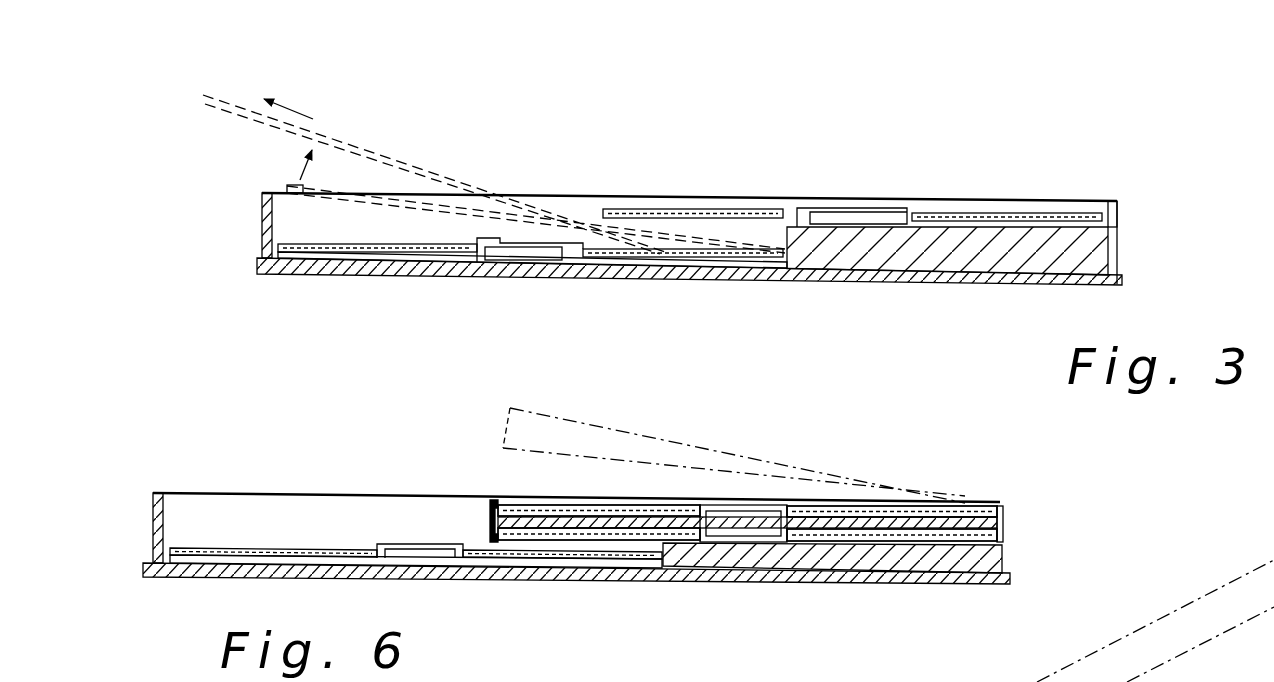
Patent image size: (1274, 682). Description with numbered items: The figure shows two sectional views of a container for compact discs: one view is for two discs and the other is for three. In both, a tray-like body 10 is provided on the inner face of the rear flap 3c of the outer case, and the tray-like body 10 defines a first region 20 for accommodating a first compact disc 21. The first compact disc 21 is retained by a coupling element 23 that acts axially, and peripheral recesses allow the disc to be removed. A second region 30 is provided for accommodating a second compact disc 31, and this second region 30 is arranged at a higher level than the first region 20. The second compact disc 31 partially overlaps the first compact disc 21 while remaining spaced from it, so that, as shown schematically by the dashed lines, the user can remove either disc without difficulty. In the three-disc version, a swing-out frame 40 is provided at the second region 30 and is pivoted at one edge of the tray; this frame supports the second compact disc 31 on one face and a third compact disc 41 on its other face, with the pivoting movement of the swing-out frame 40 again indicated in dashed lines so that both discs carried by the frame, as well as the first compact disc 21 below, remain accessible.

In FIG. 3, the tray-like body 10 is at (1107, 192).
In FIG. 6, the tray-like body 10 is at (1009, 506).
In FIG. 3, the rear flap 3c is at (683, 282).
In FIG. 6, the rear flap 3c is at (560, 580).
In FIG. 3, the first region 20 is at (403, 254).
In FIG. 6, the first region 20 is at (227, 549).
In FIG. 3, the first compact disc 21 is at (372, 158).
In FIG. 6, the first compact disc 21 is at (310, 550).
In FIG. 3, the coupling element 23 is at (573, 243).
In FIG. 6, the coupling element 23 is at (393, 547).
In FIG. 3, the second region 30 is at (1037, 222).
In FIG. 6, the second region 30 is at (957, 540).
In FIG. 3, the second compact disc 31 is at (992, 212).
In FIG. 6, the second compact disc 31 is at (923, 513).
In FIG. 6, the swing-out frame 40 is at (695, 443).
In FIG. 6, the third compact disc 41 is at (880, 540).